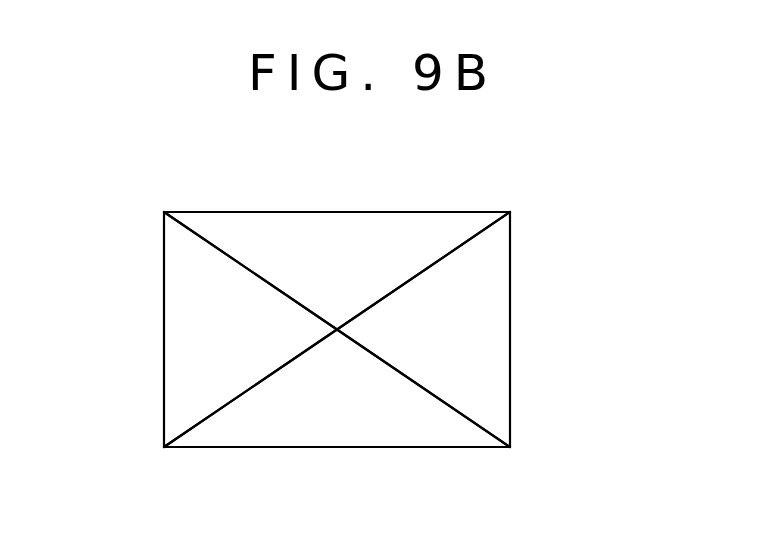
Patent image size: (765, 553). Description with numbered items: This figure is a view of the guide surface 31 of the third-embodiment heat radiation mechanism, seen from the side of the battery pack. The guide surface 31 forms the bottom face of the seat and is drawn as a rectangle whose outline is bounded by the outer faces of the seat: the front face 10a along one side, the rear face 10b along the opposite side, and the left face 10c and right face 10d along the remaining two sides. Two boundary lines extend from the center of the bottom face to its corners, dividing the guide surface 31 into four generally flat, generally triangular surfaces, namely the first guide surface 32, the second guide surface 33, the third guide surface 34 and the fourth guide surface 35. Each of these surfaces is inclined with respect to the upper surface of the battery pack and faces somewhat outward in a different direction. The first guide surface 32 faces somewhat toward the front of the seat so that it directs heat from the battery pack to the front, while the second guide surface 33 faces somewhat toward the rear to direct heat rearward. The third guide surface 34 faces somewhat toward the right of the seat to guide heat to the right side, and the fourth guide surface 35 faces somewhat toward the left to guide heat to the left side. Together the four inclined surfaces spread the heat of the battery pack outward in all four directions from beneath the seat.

The guide surface 31 is at (521, 243).
The first guide surface 32 is at (198, 333).
The second guide surface 33 is at (477, 328).
The third guide surface 34 is at (363, 233).
The fourth guide surface 35 is at (350, 418).
The front face 10a is at (164, 378).
The rear face 10b is at (510, 368).
The left face 10c is at (422, 447).
The right face 10d is at (280, 212).